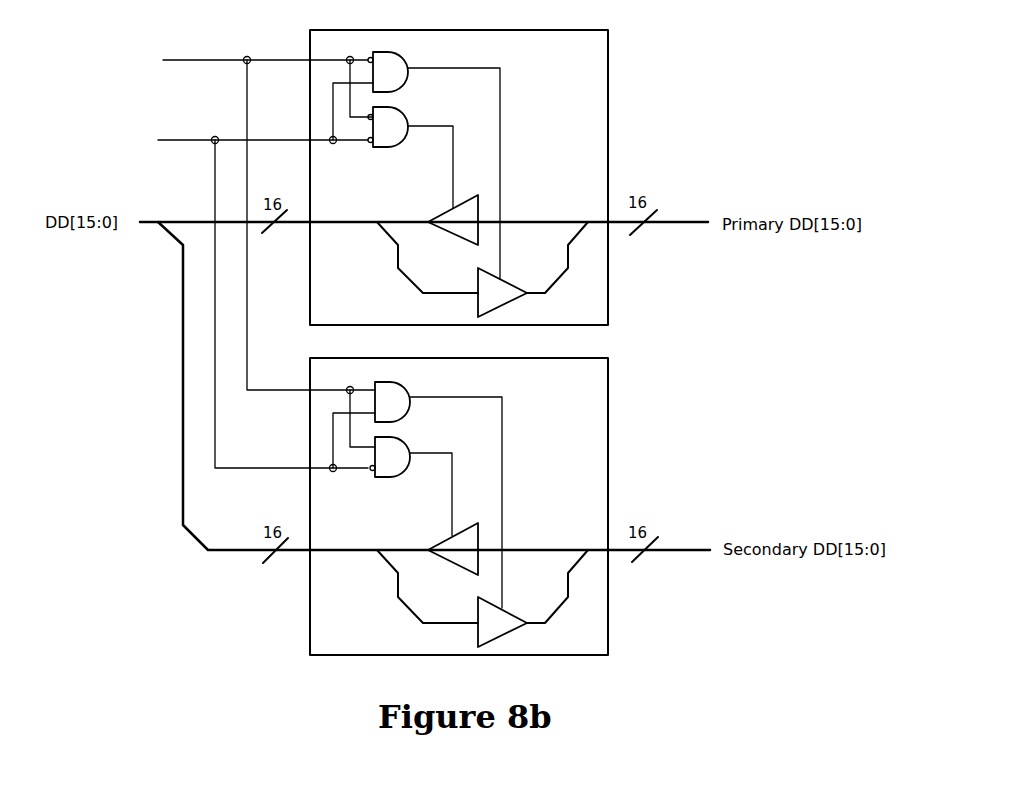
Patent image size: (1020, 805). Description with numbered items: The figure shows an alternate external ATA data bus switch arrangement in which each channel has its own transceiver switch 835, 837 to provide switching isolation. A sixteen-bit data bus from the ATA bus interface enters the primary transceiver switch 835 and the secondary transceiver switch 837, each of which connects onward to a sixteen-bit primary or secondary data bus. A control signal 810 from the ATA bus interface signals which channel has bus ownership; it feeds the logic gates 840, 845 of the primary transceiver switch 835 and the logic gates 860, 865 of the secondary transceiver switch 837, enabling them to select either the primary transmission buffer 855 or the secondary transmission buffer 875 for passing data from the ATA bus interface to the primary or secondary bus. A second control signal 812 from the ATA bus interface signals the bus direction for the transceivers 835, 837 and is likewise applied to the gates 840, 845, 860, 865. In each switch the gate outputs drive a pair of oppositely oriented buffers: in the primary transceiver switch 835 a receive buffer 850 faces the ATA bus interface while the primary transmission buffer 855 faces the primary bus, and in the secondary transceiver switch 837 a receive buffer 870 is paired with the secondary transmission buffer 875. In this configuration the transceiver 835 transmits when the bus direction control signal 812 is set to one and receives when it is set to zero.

The control signal 810 is at (206, 223).
The second control signal 812 is at (205, 277).
The transceiver switch 835 is at (459, 177).
The transceiver switch 837 is at (459, 506).
The AND gate 840 is at (434, 163).
The AND gate 845 is at (410, 152).
The tri-state buffer 850 is at (453, 220).
The primary transmission buffer 855 is at (482, 269).
The AND gate 860 is at (438, 487).
The AND gate 865 is at (411, 479).
The tri-state buffer 870 is at (453, 549).
The secondary transmission buffer 875 is at (482, 598).